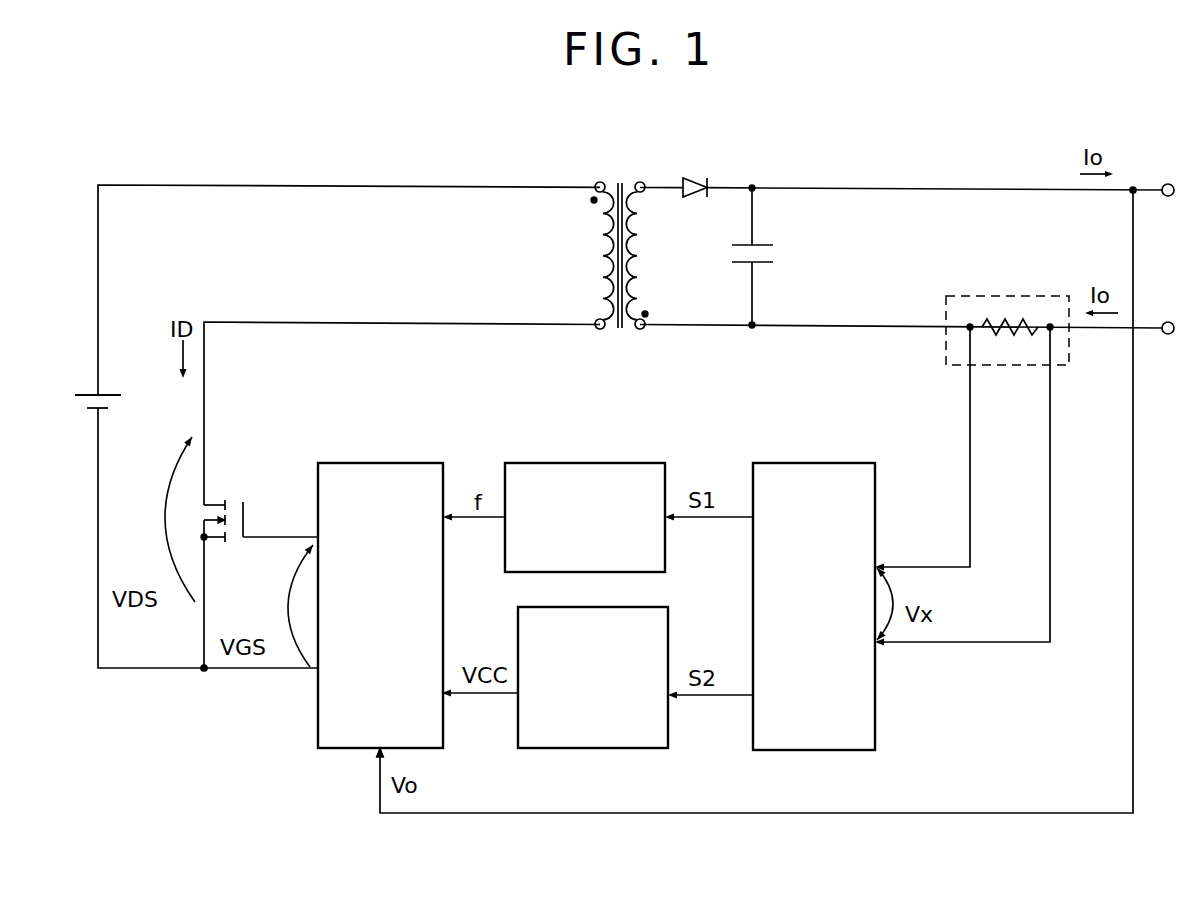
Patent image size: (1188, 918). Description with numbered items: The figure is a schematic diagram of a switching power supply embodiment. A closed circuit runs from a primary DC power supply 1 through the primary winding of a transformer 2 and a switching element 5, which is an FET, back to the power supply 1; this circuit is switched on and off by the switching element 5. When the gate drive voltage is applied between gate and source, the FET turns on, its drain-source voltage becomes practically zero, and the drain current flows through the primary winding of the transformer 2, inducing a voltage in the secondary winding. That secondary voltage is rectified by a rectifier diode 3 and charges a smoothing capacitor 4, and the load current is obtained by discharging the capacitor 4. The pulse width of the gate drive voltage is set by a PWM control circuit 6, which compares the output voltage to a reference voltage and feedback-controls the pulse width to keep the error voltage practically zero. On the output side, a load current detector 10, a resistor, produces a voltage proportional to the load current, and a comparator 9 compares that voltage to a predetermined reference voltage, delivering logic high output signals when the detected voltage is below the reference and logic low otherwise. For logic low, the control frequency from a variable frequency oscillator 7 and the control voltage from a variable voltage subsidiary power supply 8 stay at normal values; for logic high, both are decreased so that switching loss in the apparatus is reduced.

The primary DC power supply 1 is at (77, 393).
The transformer 2 is at (620, 177).
The rectifier diode 3 is at (697, 178).
The smoothing capacitor 4 is at (775, 253).
The switching element 5 is at (218, 497).
The PWM control circuit 6 is at (355, 463).
The variable frequency oscillator 7 is at (565, 463).
The variable voltage subsidiary power supply 8 is at (565, 748).
The comparator 9 is at (808, 463).
The load current detector 10 is at (946, 347).